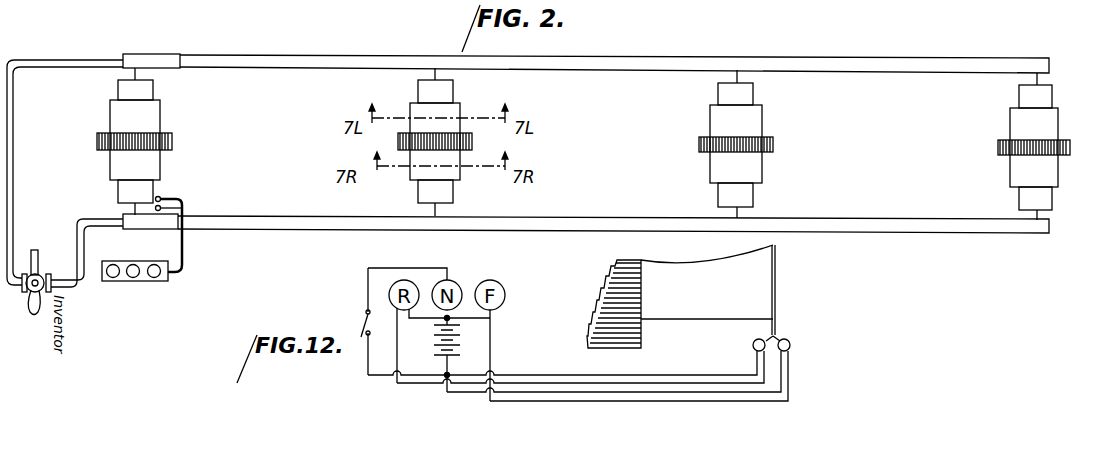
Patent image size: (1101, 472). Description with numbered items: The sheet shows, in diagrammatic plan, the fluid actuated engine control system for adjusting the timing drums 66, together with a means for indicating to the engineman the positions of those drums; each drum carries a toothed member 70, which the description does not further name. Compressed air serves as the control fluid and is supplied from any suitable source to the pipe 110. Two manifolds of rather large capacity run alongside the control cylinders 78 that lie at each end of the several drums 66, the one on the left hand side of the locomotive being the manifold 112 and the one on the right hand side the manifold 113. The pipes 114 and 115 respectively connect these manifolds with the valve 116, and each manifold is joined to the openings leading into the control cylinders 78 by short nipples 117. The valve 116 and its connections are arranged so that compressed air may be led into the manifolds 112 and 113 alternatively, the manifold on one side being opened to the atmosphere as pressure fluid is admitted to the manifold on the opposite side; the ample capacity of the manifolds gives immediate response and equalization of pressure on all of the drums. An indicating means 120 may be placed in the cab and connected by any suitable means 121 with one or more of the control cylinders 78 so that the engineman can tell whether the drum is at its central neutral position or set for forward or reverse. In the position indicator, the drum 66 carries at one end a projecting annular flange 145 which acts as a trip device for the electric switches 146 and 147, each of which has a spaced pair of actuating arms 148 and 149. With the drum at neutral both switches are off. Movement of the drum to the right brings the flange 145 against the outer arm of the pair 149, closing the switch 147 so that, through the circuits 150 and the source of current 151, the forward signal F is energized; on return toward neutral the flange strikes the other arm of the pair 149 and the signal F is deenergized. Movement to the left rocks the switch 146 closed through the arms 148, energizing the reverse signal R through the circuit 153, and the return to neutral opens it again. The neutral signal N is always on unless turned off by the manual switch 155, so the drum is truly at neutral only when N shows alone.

In FIG. 2, the timing drum 66 is at (157, 112).
In FIG. 12, the timing drum 66 is at (667, 308).
In FIG. 2, the gear 70 is at (172, 141).
In FIG. 12, the gear 70 is at (612, 283).
In FIG. 2, the control cylinders 78 is at (136, 190).
In FIG. 2, the pipe 110 is at (48, 258).
In FIG. 2, the manifold 112 is at (296, 60).
In FIG. 2, the manifold 113 is at (360, 219).
In FIG. 2, the pipe 114 is at (63, 60).
In FIG. 2, the pipe 115 is at (97, 220).
In FIG. 2, the valve 116 is at (52, 287).
In FIG. 2, the short nipples 117 is at (140, 78).
In FIG. 2, the indicating means 120 is at (145, 281).
In FIG. 2, the connecting means 121 is at (182, 219).
In FIG. 12, the annular flange 145 is at (782, 333).
In FIG. 12, the electric switch 146 is at (754, 351).
In FIG. 12, the electric switch 147 is at (790, 349).
In FIG. 12, the actuating arms 148 is at (762, 338).
In FIG. 12, the actuating arms 149 is at (792, 336).
In FIG. 12, the circuits 150 is at (640, 400).
In FIG. 12, the source of current 151 is at (462, 337).
In FIG. 12, the circuit 153 is at (533, 383).
In FIG. 12, the manual switch 155 is at (364, 325).